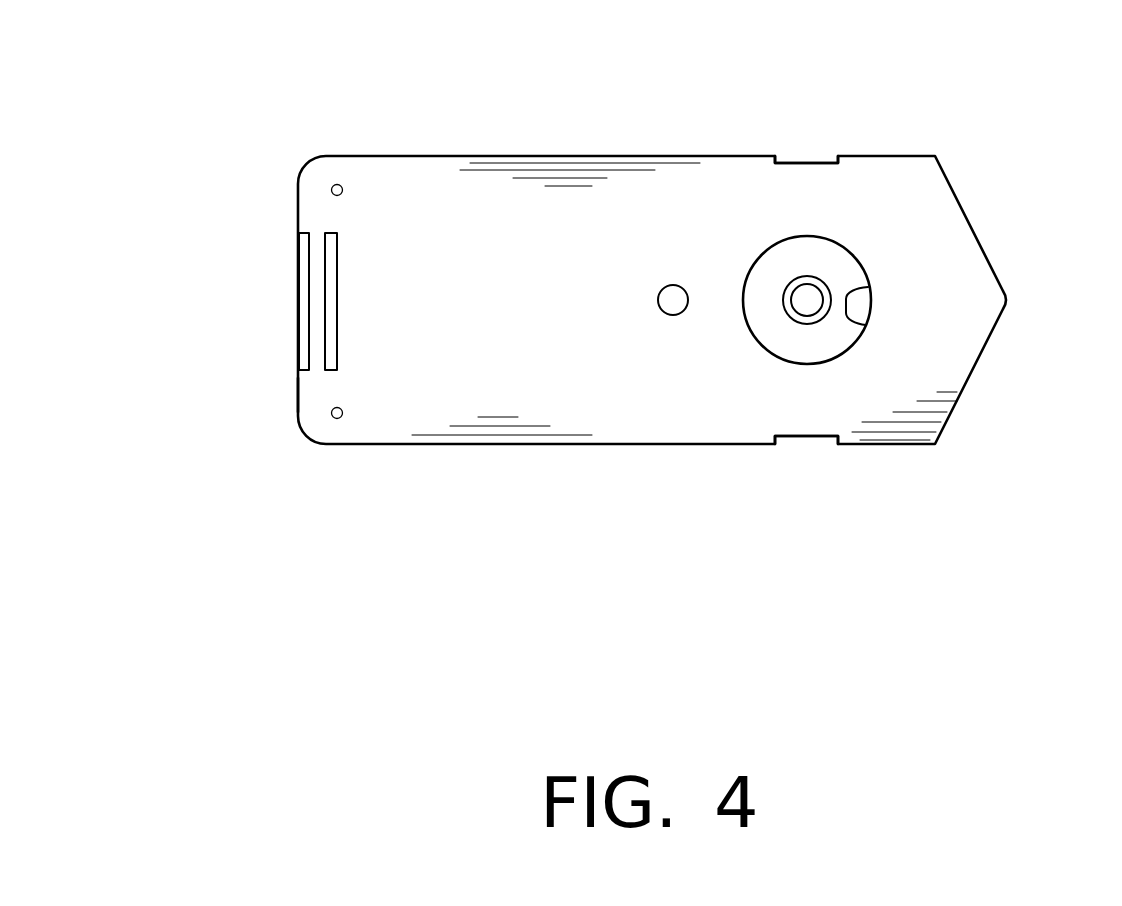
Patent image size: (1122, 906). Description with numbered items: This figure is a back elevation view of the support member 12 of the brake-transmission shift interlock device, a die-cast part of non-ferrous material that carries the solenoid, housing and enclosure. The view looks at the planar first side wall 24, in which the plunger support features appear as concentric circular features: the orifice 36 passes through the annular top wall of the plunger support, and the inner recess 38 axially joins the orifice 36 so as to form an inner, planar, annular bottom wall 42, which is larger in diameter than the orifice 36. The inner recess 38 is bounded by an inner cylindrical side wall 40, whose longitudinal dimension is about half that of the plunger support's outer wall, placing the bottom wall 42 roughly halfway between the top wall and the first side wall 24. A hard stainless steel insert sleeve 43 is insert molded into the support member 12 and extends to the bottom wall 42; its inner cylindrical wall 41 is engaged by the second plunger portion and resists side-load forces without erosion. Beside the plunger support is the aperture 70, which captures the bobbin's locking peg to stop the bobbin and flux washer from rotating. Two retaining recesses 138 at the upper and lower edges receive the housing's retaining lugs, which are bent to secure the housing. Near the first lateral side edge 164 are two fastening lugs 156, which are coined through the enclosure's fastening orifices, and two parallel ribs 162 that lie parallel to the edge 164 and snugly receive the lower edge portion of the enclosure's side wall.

The support member 12 is at (997, 338).
The first side wall 24 is at (660, 413).
The orifice 36 is at (807, 302).
The inner recess 38 is at (852, 345).
The inner cylindrical side wall 40 is at (860, 288).
The inner cylindrical wall 41 is at (808, 278).
The bottom wall 42 is at (763, 280).
The insert sleeve 43 is at (807, 324).
The aperture 70 is at (658, 302).
The retaining recesses 138 is at (805, 163).
The fastening lugs 156 is at (338, 184).
The ribs 162 is at (332, 302).
The first lateral side edge 164 is at (298, 392).